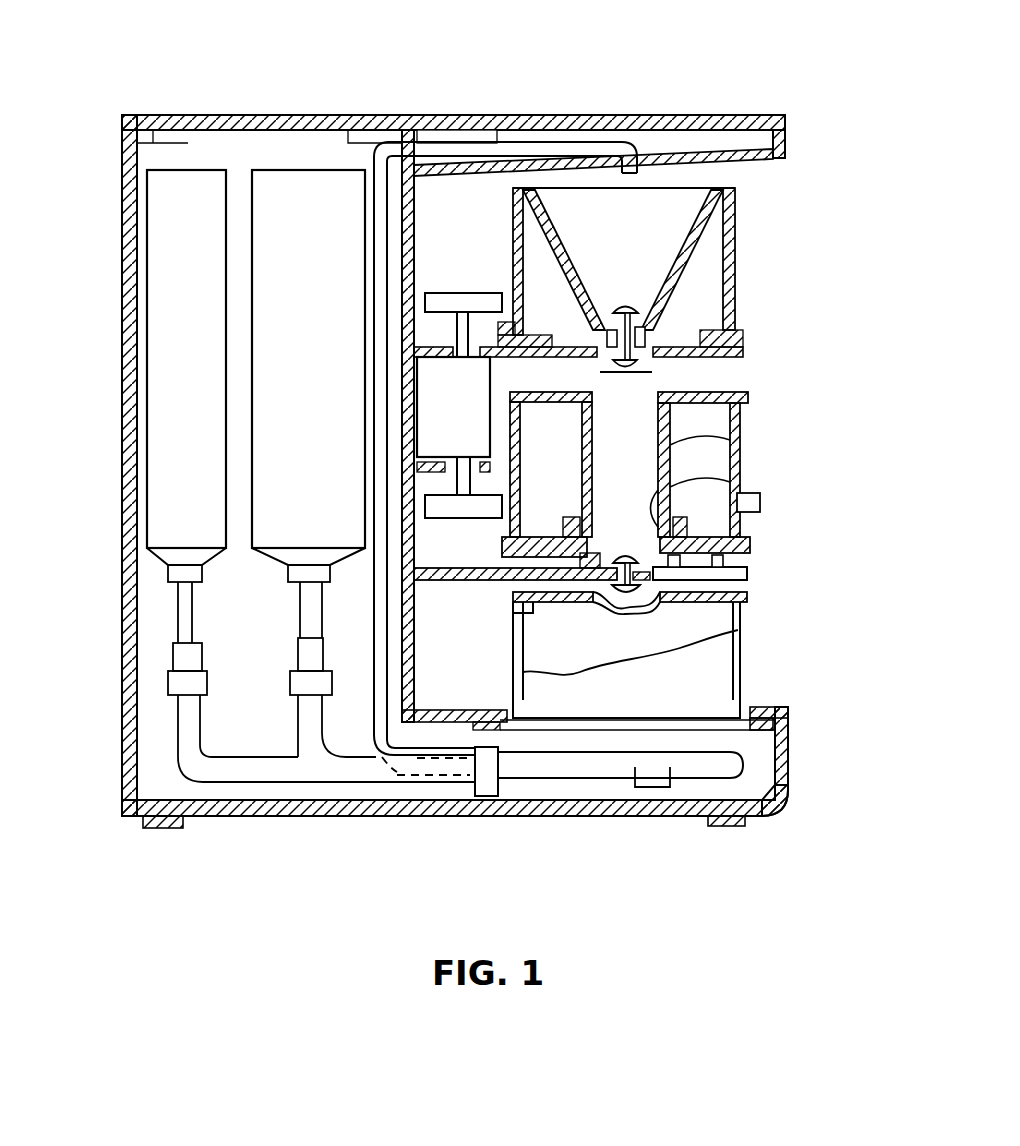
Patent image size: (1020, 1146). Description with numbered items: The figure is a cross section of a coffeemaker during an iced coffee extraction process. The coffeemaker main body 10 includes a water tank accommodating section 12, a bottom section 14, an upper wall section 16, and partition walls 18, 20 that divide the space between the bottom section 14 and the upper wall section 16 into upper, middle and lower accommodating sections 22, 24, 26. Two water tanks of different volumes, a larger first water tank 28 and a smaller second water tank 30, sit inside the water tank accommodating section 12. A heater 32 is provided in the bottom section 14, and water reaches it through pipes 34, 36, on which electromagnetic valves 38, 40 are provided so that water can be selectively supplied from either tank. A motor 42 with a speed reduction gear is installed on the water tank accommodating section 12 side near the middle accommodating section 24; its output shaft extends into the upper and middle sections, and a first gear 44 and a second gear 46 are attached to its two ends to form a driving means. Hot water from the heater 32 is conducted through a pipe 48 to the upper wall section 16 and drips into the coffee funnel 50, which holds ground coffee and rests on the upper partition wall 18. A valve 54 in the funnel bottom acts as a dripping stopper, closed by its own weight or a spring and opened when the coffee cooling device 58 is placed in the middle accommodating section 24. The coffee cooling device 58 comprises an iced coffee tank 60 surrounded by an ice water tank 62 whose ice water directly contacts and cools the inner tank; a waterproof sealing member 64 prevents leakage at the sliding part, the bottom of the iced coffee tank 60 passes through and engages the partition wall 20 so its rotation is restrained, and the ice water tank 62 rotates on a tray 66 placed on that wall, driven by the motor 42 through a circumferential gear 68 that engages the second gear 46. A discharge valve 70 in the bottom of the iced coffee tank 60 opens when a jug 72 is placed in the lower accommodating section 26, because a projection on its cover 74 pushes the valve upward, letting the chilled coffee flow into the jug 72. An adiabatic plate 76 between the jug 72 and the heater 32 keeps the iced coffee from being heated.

The coffeemaker main body 10 is at (255, 822).
The water tank accommodating section 12 is at (122, 200).
The bottom section 14 is at (788, 757).
The upper wall section 16 is at (688, 115).
The upper partition wall 18 is at (740, 350).
The lower partition wall 20 is at (745, 573).
The upper accommodating section 22 is at (783, 185).
The middle accommodating section 24 is at (752, 368).
The lower accommodating section 26 is at (778, 588).
The first water tank 28 is at (250, 378).
The second water tank 30 is at (145, 300).
The heater 32 is at (593, 780).
The pipe 34 is at (296, 598).
The pipe 36 is at (178, 598).
The electromagnetic valve 38 is at (288, 680).
The electromagnetic valve 40 is at (175, 680).
The motor 42 is at (437, 432).
The first gear 44 is at (453, 293).
The second gear 46 is at (483, 520).
The pipe 48 is at (497, 128).
The coffee funnel 50 is at (735, 243).
The valve 54 is at (625, 300).
The coffee cooling device 58 is at (786, 464).
The iced coffee tank 60 is at (678, 440).
The ice water tank 62 is at (745, 455).
The waterproof sealing member 64 is at (740, 485).
The tray 66 is at (748, 530).
The circumferential gear 68 is at (760, 505).
The discharge valve 70 is at (628, 553).
The jug 72 is at (740, 650).
The cover 74 is at (745, 598).
The adiabatic plate 76 is at (740, 740).